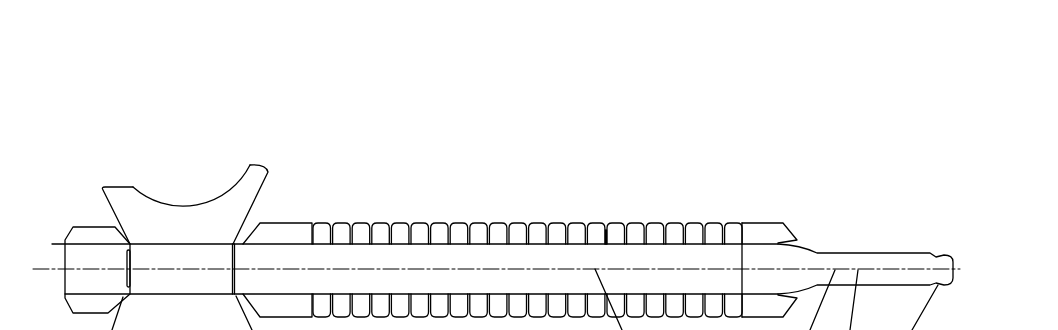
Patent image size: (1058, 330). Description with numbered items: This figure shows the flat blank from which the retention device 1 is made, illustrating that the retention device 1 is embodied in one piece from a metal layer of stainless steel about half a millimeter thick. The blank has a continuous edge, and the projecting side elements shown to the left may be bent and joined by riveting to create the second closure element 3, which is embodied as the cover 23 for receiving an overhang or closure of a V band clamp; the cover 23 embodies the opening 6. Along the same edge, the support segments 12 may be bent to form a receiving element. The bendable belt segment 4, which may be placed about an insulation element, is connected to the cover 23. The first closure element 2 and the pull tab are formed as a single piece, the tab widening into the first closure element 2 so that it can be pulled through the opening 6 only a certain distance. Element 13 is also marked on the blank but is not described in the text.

The retention device 1 is at (496, 196).
The first closure element 2 is at (783, 262).
The second closure element 3 is at (189, 197).
The belt segment 4 is at (510, 263).
The opening 6 is at (125, 260).
The support segments 12 is at (443, 237).
The slot 13 is at (603, 240).
The cover 23 is at (222, 183).